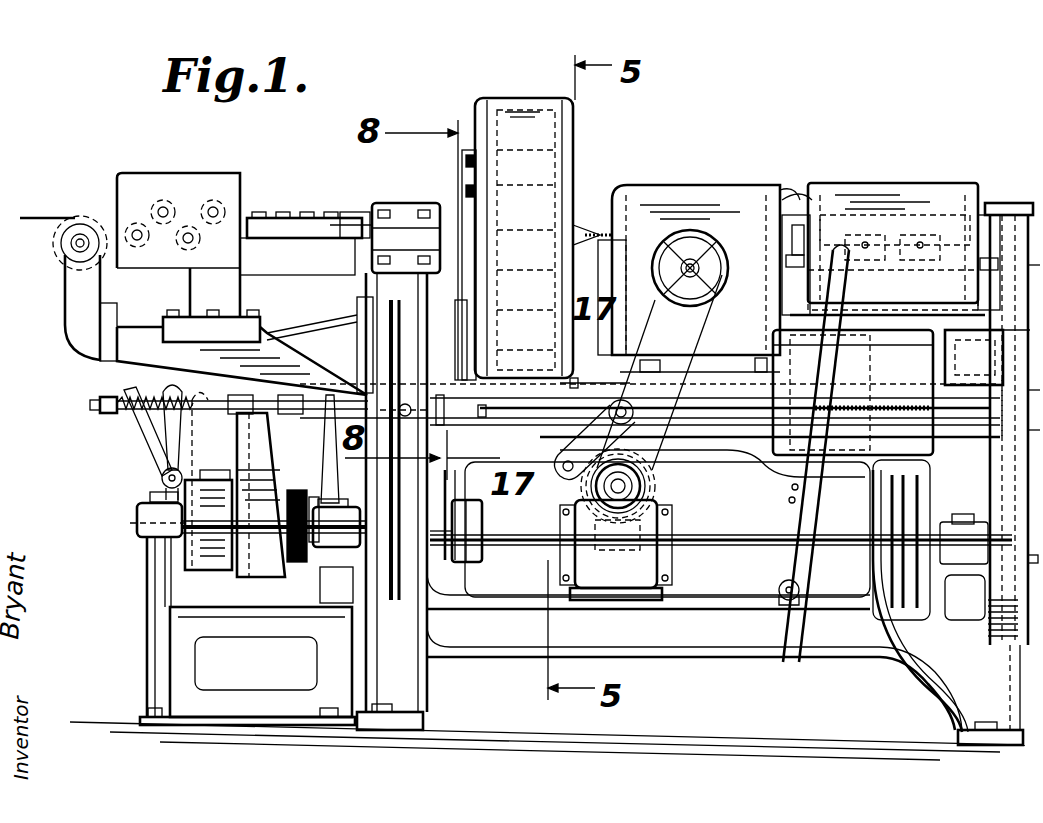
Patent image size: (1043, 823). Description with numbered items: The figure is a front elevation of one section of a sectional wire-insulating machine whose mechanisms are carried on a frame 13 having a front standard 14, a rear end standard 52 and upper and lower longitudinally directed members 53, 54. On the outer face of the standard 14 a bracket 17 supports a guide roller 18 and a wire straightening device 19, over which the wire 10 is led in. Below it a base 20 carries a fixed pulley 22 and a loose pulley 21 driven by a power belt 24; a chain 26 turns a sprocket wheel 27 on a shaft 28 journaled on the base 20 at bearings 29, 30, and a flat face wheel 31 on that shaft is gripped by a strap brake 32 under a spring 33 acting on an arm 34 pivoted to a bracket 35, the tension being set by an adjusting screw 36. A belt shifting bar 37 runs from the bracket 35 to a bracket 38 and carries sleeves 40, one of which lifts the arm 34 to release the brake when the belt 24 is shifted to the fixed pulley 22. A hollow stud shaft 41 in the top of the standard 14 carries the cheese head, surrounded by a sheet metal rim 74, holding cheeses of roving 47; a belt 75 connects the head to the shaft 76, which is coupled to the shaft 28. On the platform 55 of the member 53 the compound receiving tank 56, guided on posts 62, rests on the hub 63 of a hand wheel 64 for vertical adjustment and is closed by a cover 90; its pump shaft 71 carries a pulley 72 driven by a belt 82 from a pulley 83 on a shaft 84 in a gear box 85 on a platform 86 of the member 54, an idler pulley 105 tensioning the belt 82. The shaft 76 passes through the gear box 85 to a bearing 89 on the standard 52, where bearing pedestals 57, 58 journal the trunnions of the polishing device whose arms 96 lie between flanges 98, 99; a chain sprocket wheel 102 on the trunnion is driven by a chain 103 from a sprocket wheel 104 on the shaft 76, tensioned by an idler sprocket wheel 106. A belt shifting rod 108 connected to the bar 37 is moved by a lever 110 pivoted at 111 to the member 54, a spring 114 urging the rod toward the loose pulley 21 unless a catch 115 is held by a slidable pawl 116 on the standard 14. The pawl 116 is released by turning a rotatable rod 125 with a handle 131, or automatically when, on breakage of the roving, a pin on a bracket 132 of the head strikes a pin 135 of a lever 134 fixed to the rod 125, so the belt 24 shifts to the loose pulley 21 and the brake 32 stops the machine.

The wire 10 is at (56, 218).
The frame 13 is at (518, 640).
The standard 14 is at (435, 330).
The bracket 17 is at (135, 355).
The guide roller 18 is at (62, 253).
The wire straightening device 19 is at (235, 205).
The base 20 is at (180, 628).
The loose pulley 21 is at (290, 480).
The fixed pulley 22 is at (222, 470).
The power driven belt 24 is at (253, 420).
The chain 26 is at (298, 492).
The sprocket wheel 27 is at (310, 560).
The shaft 28 is at (250, 540).
The bearing 29 is at (140, 528).
The bearing 30 is at (336, 551).
The flat face wheel 31 is at (180, 560).
The strap brake 32 is at (140, 505).
The spring 33 is at (145, 410).
The arm 34 is at (178, 430).
The bracket 35 is at (150, 490).
The adjusting screw 36 is at (110, 410).
The belt shifting bar 37 is at (218, 406).
The bracket 38 is at (328, 426).
The sleeves 40 is at (213, 408).
The hollow stud shaft 41 is at (400, 225).
The roving 47 is at (578, 215).
The rear end standard 52 is at (910, 440).
The longitudinally directed member 53 is at (745, 452).
The longitudinally directed member 54 is at (717, 625).
The platform 55 is at (707, 440).
The compound receiving tank 56 is at (630, 270).
The bearing pedestal 57 is at (795, 235).
The bearing pedestal 58 is at (992, 238).
The posts 62 is at (812, 358).
The hub 63 is at (680, 350).
The hand wheel 64 is at (738, 360).
The shaft 71 is at (722, 280).
The pulley 72 is at (683, 282).
The sheet metal rim 74 is at (570, 130).
The belt 75 is at (482, 100).
The shaft 76 is at (721, 549).
The belt 82 is at (712, 322).
The pulley 83 is at (660, 490).
The shaft 84 is at (580, 495).
The gear box 85 is at (575, 540).
The platform 86 is at (575, 590).
The bearing 89 is at (960, 540).
The cover 90 is at (690, 200).
The arm 96 is at (905, 215).
The flange 98 is at (830, 225).
The flange 99 is at (958, 215).
The chain sprocket wheel 102 is at (975, 296).
The chain 103 is at (1005, 408).
The sprocket wheel 104 is at (1005, 495).
The idler pulley 105 is at (612, 405).
The idler sprocket wheel 106 is at (950, 346).
The belt shifting rod 108 is at (405, 408).
The shifting bar operating lever 110 is at (790, 510).
The pivot 111 is at (792, 585).
The spring 114 is at (890, 405).
The catch 115 is at (483, 412).
The slidable pawl 116 is at (440, 408).
The rotatable rod 125 is at (592, 383).
The handle 131 is at (575, 378).
The bracket 132 is at (468, 170).
The lever 134 is at (455, 320).
The pin 135 is at (472, 312).